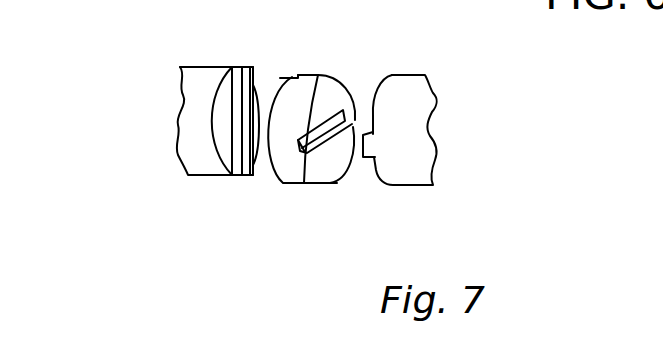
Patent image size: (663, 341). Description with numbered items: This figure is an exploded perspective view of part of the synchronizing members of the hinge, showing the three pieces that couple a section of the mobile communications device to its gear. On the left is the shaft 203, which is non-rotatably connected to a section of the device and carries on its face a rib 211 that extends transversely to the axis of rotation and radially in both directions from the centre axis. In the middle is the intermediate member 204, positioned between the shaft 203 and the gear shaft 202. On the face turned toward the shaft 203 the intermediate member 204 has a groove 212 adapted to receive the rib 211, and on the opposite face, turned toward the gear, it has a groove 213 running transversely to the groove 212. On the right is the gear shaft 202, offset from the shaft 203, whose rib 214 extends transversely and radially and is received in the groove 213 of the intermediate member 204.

The gear shaft 202 is at (410, 118).
The shaft 203 is at (197, 148).
The intermediate member 204 is at (316, 75).
The rib 211 is at (240, 177).
The groove 212 is at (292, 78).
The groove 213 is at (302, 150).
The rib 214 is at (367, 158).